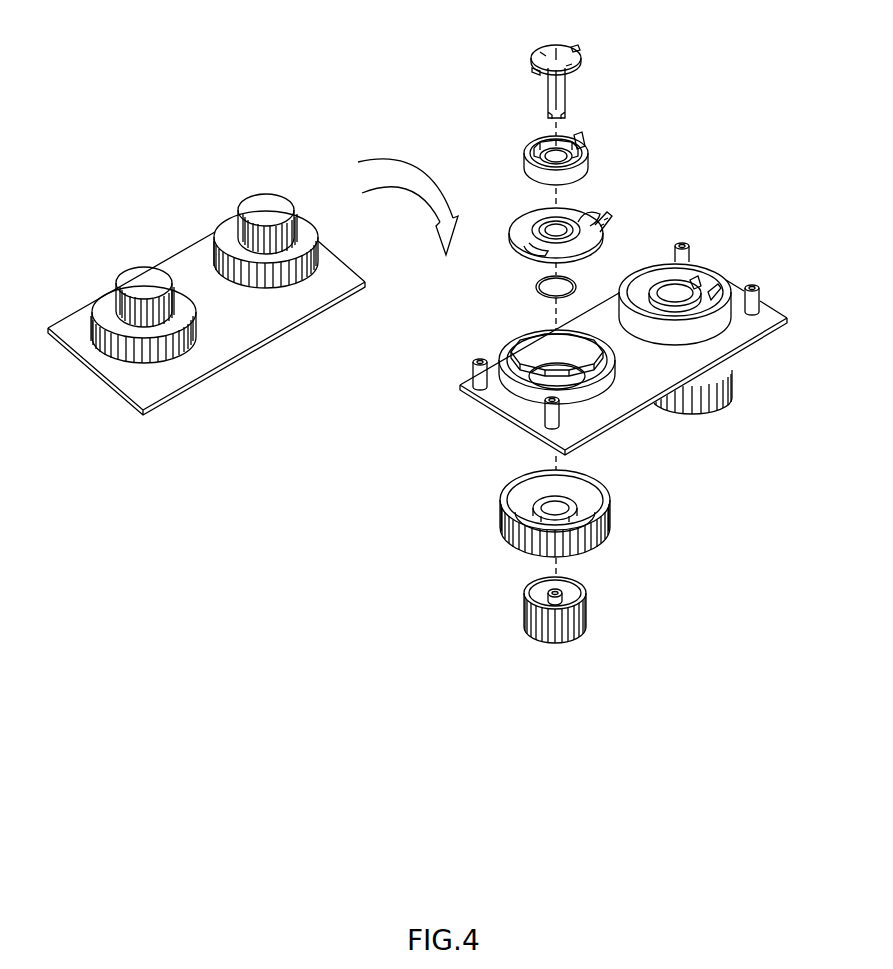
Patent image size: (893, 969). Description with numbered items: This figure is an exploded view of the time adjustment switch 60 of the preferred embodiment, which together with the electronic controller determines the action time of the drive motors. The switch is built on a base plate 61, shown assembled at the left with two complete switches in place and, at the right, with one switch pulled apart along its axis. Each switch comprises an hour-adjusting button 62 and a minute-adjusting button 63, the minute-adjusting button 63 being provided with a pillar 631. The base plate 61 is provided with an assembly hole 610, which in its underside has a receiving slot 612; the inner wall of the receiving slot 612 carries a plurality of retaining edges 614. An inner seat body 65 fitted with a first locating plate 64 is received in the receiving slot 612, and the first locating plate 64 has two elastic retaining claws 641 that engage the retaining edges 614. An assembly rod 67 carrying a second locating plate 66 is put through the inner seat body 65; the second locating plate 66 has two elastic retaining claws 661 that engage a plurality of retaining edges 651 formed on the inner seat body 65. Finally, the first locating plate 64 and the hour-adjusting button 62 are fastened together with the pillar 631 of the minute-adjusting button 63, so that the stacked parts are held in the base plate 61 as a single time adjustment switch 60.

The time adjustment switch 60 is at (386, 412).
The base plate 61 is at (247, 327).
The hour-adjusting button 62 is at (117, 340).
The minute-adjusting button 63 is at (386, 425).
The pillar 631 is at (549, 592).
The first locating plate 64 is at (570, 234).
The elastic retaining claws 641 is at (592, 213).
The inner seat body 65 is at (560, 151).
The retaining edges 651 is at (553, 146).
The second locating plate 66 is at (560, 51).
The elastic retaining claws 661 is at (580, 49).
The assembly rod 67 is at (566, 101).
The assembly hole 610 is at (565, 382).
The receiving slot 612 is at (541, 380).
The retaining edges 614 is at (575, 340).